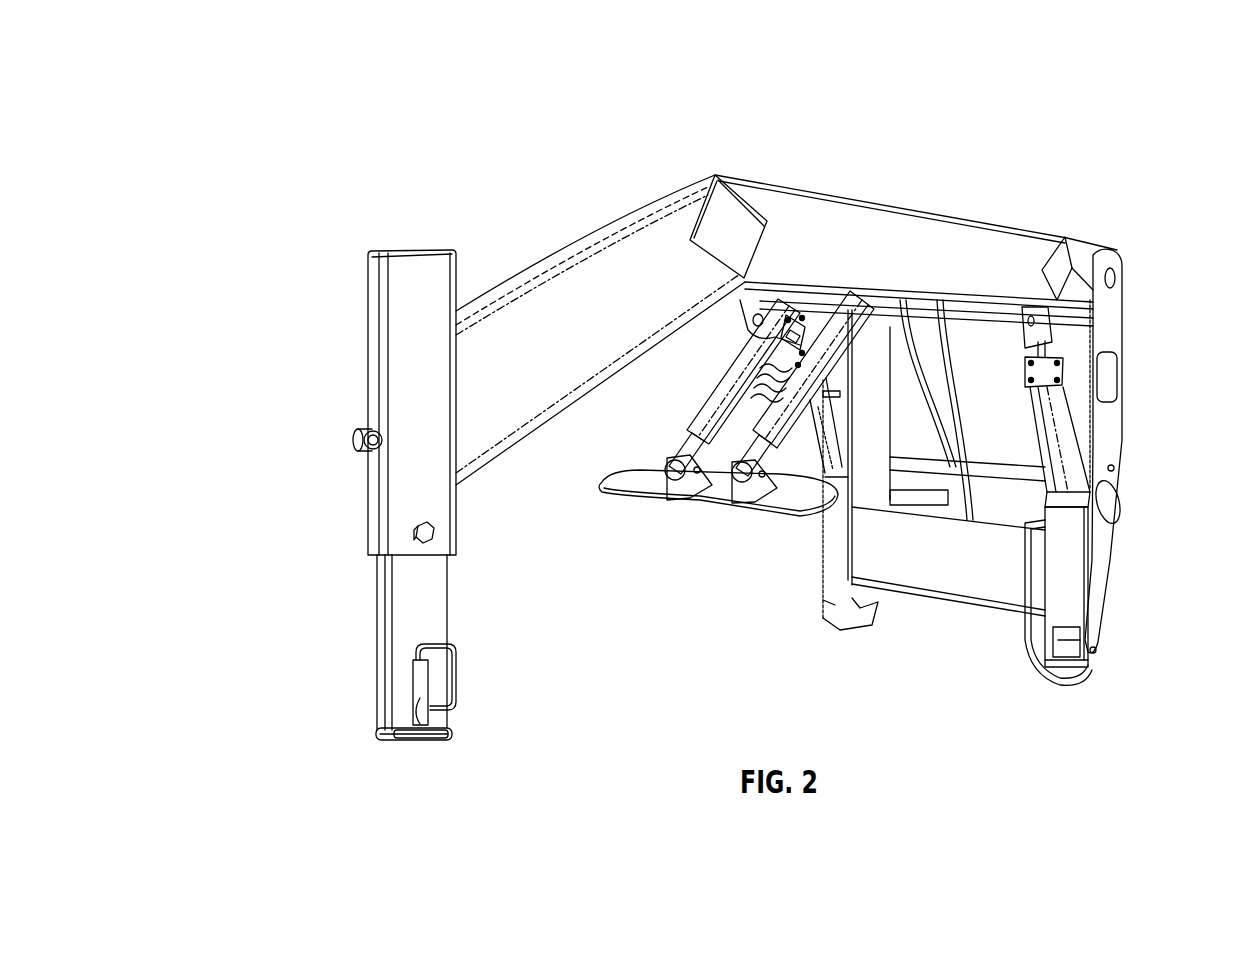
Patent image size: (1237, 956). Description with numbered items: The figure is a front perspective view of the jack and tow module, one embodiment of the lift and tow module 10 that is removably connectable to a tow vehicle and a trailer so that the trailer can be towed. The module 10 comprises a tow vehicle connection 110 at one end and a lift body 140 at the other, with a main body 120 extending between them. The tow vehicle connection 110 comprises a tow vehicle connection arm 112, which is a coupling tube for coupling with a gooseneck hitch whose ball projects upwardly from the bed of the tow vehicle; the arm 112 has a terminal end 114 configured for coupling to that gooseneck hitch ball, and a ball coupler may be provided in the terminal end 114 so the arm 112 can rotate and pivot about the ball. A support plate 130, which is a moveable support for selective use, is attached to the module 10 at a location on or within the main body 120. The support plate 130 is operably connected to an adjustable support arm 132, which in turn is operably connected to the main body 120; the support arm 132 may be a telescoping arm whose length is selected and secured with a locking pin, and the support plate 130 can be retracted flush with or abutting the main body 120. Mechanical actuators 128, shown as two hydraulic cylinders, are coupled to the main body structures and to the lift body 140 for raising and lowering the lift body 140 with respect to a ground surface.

The lift and tow module 10 is at (345, 215).
The tow vehicle connection 110 is at (315, 522).
The tow vehicle connection arm 112 is at (378, 642).
The terminal end 114 is at (378, 736).
The main body 120 is at (592, 190).
The mechanical actuators 128 is at (833, 447).
The support plate 130 is at (655, 498).
The adjustable support arm 132 is at (768, 350).
The lift body 140 is at (1125, 468).